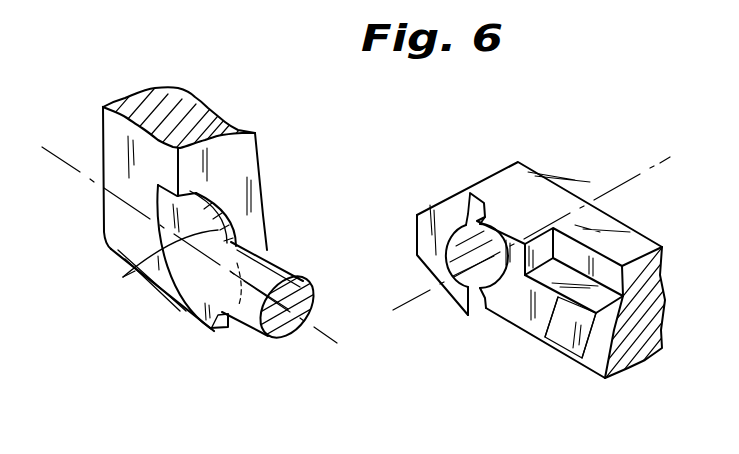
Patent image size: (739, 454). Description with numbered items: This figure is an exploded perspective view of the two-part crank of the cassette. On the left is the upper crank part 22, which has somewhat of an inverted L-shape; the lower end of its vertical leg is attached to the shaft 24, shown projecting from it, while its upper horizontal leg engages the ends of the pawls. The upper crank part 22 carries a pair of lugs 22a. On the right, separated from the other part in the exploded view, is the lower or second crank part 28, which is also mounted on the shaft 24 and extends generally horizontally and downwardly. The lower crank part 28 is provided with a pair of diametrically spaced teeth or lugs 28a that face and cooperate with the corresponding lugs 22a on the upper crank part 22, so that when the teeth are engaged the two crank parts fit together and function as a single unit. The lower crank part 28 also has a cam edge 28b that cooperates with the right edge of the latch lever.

The upper crank part 22 is at (248, 158).
The lugs 22a is at (135, 271).
The shaft 24 is at (284, 272).
The lower crank part 28 is at (547, 186).
The teeth or lugs 28a is at (472, 216).
The cam edge 28b is at (567, 340).